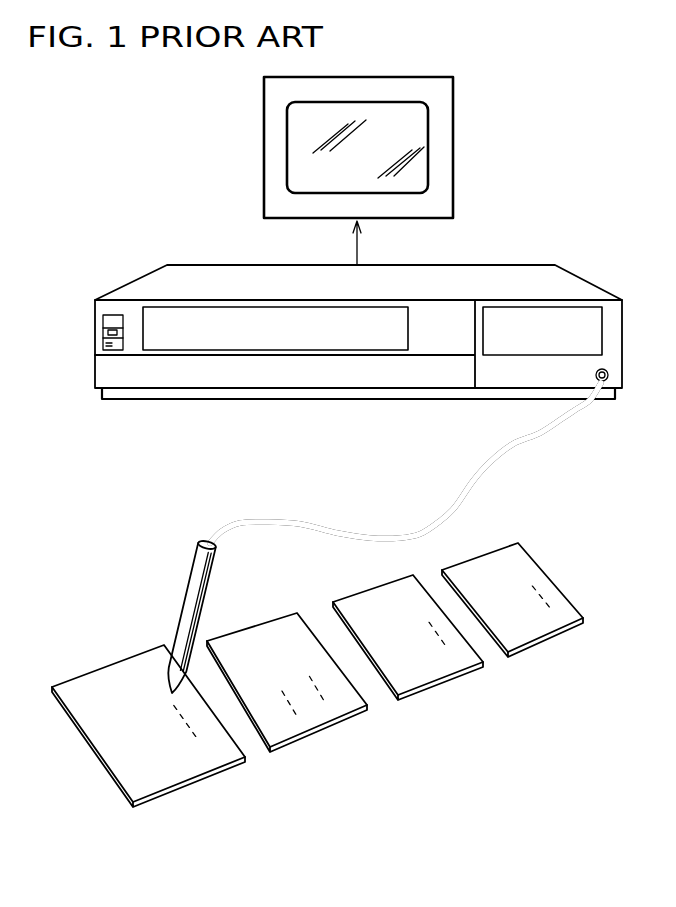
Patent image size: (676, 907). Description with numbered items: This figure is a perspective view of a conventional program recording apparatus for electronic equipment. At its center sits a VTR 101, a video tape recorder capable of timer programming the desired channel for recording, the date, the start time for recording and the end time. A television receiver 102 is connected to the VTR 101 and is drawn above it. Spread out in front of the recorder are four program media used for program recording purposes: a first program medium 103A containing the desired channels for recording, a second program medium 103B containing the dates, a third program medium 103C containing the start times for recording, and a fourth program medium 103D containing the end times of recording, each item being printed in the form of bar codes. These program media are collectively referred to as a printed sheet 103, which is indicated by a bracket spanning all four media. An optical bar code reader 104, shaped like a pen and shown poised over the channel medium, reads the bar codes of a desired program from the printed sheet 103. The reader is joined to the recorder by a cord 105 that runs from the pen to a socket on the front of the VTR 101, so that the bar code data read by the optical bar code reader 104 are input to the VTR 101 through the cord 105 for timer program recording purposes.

The VTR 101 is at (531, 270).
The television receiver 102 is at (437, 132).
The printed sheet 103 is at (345, 689).
The program medium 103A is at (173, 770).
The program medium 103B is at (303, 718).
The program medium 103C is at (427, 668).
The program medium 103D is at (536, 614).
The optical bar code reader 104 is at (197, 576).
The cord 105 is at (487, 472).